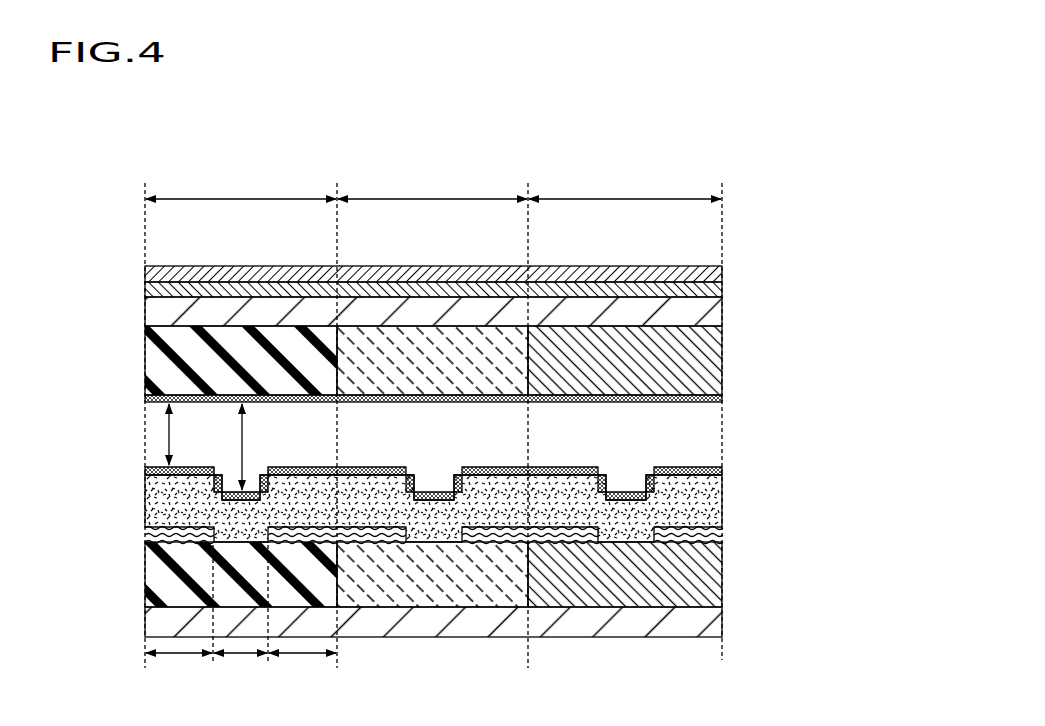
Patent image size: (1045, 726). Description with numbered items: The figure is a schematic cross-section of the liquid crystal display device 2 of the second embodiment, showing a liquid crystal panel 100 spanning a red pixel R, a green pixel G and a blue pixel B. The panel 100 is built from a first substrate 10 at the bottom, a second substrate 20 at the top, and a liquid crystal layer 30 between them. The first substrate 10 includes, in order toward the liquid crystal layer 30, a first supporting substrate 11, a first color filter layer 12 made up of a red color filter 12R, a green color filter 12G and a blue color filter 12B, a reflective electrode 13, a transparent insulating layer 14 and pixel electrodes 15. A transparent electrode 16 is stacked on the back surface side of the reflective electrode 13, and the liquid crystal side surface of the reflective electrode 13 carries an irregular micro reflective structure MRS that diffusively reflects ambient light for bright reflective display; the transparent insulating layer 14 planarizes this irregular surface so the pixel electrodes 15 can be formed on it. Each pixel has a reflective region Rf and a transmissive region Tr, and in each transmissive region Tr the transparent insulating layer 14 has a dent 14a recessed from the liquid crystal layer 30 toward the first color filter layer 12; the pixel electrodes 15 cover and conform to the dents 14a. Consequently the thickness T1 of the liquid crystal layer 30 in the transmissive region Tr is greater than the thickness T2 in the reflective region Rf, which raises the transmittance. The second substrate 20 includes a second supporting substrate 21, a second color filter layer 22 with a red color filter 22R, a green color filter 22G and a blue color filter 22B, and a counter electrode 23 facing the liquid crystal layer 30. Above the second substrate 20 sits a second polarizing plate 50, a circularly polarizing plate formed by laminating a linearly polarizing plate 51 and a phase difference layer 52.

The liquid crystal display device 2 is at (750, 177).
The liquid crystal panel 100 is at (843, 348).
The second substrate 20 is at (798, 305).
The second supporting substrate 21 is at (708, 312).
The second color filter layer 22 is at (724, 330).
The red color filter 22R is at (152, 376).
The green color filter 22G is at (430, 330).
The blue color filter 22B is at (614, 345).
The counter electrode 23 is at (708, 400).
The liquid crystal layer 30 is at (140, 470).
The first substrate 10 is at (798, 646).
The first supporting substrate 11 is at (710, 618).
The first color filter layer 12 is at (724, 606).
The red color filter 12R is at (154, 577).
The green color filter 12G is at (425, 598).
The blue color filter 12B is at (627, 598).
The reflective electrode 13 is at (710, 530).
The transparent insulating layer 14 is at (712, 498).
The dent 14a is at (228, 496).
The pixel electrode 15 is at (716, 468).
The transparent electrode 16 is at (710, 543).
The micro reflective structure MRS is at (154, 531).
The second polarizing plate 50 is at (796, 214).
The linearly polarizing plate 51 is at (722, 276).
The phase difference layer 52 is at (722, 291).
The thickness of liquid crystal layer in transmissive region T1 is at (260, 447).
The thickness of liquid crystal layer in reflective region T2 is at (187, 434).
The red pixel R is at (241, 180).
The green pixel G is at (432, 180).
The blue pixel B is at (625, 180).
The reflective region Rf is at (241, 676).
The transmissive region Tr is at (240, 676).